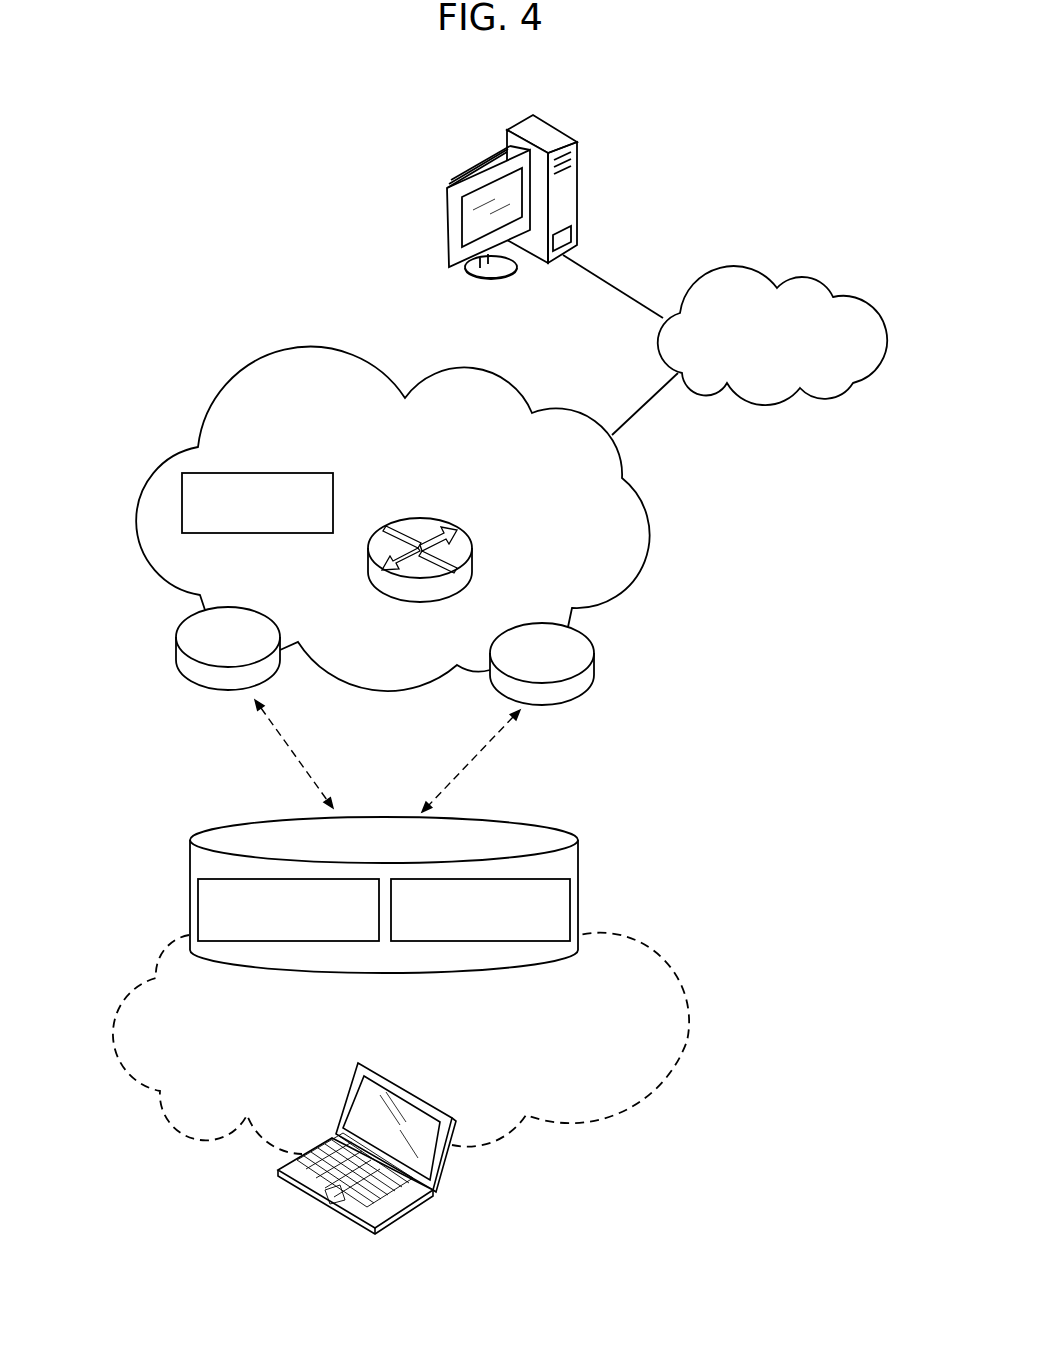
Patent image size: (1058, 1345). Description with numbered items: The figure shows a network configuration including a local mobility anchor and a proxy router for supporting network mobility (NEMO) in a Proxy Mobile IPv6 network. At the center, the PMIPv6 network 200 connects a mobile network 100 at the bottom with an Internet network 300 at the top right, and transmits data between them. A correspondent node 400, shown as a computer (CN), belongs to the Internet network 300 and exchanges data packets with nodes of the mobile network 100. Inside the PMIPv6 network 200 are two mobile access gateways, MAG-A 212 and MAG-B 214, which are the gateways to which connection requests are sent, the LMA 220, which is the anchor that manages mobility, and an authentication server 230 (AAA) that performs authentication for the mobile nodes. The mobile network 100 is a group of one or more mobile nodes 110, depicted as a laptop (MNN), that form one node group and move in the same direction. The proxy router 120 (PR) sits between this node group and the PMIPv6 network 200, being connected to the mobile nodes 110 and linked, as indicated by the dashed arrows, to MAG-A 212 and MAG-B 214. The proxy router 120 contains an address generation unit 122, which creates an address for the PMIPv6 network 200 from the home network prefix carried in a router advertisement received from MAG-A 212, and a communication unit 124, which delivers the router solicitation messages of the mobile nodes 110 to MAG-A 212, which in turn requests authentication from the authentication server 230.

The mobile network 100 is at (687, 1042).
The mobile node 110 is at (437, 1163).
The proxy router 120 is at (578, 856).
The address generation unit 122 is at (198, 911).
The communication unit 124 is at (570, 911).
The PMIPv6 network 200 is at (645, 536).
The MAG-A 212 is at (177, 651).
The MAG-B 214 is at (595, 664).
The LMA 220 is at (472, 561).
The authentication server 230 is at (260, 473).
The Internet network 300 is at (803, 277).
The correspondent node 400 is at (577, 191).